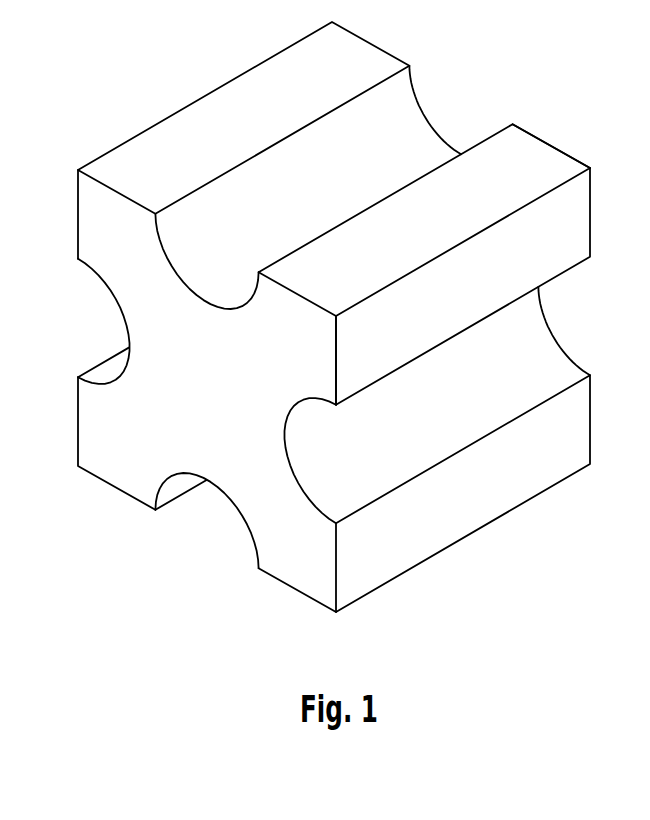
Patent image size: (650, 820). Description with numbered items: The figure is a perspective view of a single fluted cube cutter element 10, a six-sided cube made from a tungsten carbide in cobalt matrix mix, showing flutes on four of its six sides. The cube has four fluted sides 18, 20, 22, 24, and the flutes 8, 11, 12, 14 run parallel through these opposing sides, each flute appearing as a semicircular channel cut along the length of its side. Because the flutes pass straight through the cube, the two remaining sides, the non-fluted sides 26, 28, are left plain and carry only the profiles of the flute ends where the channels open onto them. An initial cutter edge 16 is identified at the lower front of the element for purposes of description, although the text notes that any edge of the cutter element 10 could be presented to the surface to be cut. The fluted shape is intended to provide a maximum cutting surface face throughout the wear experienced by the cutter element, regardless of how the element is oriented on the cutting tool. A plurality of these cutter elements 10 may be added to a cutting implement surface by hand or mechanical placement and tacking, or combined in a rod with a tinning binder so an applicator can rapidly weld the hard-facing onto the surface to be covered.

The flute 8 is at (241, 240).
The fluted cube cutter element 10 is at (297, 603).
The flute 11 is at (127, 334).
The flute 12 is at (218, 489).
The flute 14 is at (363, 448).
The initial cutter edge 16 is at (445, 550).
The fluted side 18 is at (252, 112).
The fluted side 20 is at (77, 226).
The fluted side 22 is at (459, 288).
The fluted side 24 is at (110, 487).
The non-fluted side 26 is at (197, 394).
The non-fluted side 28 is at (531, 128).